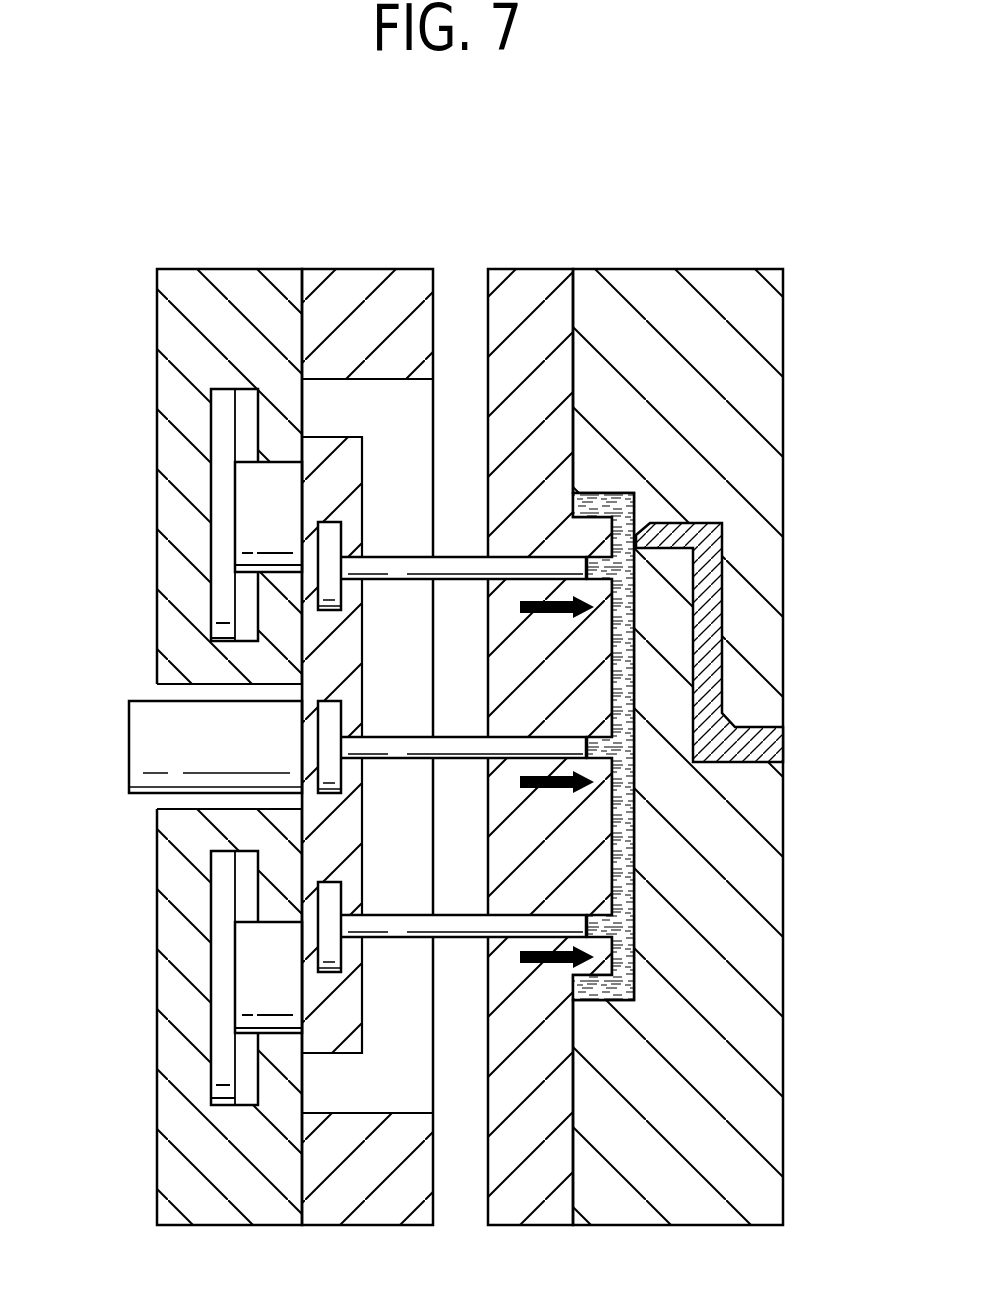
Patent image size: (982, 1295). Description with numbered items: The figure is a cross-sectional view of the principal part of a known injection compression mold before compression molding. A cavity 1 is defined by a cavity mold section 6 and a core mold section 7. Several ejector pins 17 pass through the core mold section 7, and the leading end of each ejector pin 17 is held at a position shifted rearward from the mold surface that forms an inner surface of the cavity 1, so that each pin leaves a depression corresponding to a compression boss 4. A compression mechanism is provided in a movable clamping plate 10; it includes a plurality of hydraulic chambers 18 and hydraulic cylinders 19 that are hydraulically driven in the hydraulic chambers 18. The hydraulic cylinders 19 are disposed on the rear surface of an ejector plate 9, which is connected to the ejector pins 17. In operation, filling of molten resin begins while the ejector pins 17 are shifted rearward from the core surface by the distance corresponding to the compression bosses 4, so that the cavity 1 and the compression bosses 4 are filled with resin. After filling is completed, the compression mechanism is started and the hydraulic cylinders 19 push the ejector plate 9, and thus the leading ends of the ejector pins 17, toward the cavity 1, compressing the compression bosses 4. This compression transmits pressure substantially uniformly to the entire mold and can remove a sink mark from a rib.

The cavity 1 is at (636, 503).
The compression boss 4 is at (603, 563).
The cavity mold section 6 is at (652, 296).
The core mold section 7 is at (537, 287).
The ejector plate 9 is at (328, 450).
The movable clamping plate 10 is at (237, 293).
The ejector pin 17 is at (407, 565).
The hydraulic chamber 18 is at (245, 432).
The hydraulic cylinder 19 is at (263, 512).